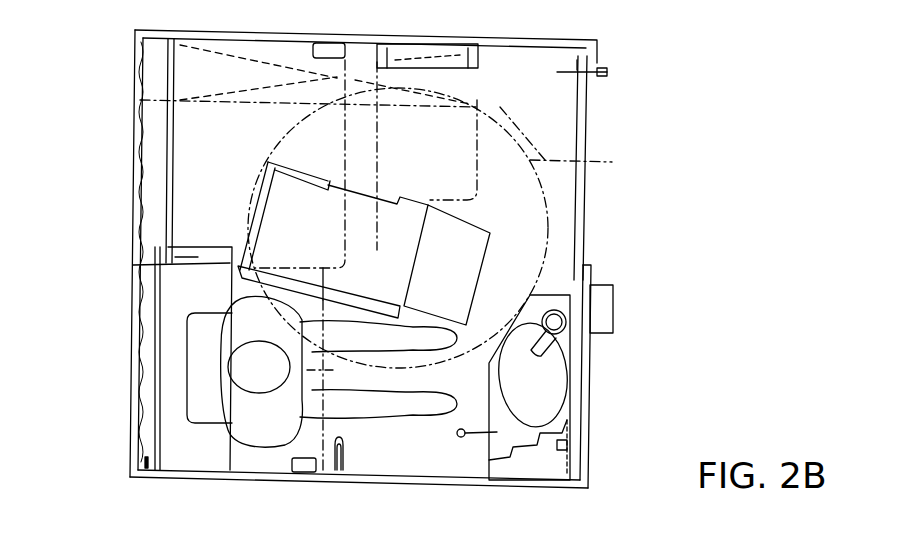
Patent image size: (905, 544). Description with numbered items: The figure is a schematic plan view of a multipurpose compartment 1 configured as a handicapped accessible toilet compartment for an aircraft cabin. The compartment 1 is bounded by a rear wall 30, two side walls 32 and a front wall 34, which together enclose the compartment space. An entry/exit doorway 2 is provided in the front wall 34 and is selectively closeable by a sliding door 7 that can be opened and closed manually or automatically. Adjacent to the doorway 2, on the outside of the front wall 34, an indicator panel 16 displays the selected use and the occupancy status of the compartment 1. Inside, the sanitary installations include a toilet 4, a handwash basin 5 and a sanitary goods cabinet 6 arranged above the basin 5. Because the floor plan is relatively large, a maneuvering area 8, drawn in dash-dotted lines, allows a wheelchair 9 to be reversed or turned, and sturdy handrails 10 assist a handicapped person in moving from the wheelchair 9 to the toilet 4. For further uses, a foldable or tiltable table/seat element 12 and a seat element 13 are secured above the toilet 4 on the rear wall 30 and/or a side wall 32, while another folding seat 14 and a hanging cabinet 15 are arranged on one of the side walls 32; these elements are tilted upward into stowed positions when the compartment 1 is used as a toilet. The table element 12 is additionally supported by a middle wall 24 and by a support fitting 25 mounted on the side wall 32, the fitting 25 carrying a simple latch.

The multipurpose compartment 1 is at (636, 384).
The entry/exit doorway 2 is at (622, 167).
The toilet 4 is at (207, 347).
The handwash basin 5 is at (548, 380).
The sanitary goods cabinet 6 is at (567, 450).
The sliding door 7 is at (582, 123).
The maneuvering area 8 is at (552, 238).
The wheelchair 9 is at (292, 215).
The handrails 10 is at (347, 445).
The table/seat element 12 is at (162, 128).
The seat element 13 is at (147, 371).
The folding seat 14 is at (461, 62).
The hanging cabinet 15 is at (207, 60).
The indicator panel 16 is at (600, 313).
The middle wall 24 is at (133, 265).
The support fitting 25 is at (328, 48).
The rear wall 30 is at (150, 228).
The side walls 32 is at (267, 36).
The front wall 34 is at (587, 357).